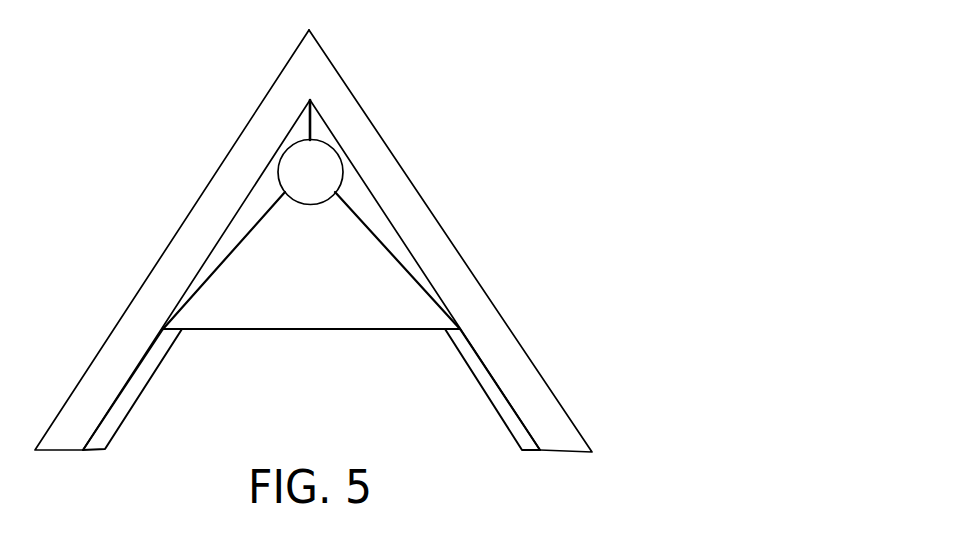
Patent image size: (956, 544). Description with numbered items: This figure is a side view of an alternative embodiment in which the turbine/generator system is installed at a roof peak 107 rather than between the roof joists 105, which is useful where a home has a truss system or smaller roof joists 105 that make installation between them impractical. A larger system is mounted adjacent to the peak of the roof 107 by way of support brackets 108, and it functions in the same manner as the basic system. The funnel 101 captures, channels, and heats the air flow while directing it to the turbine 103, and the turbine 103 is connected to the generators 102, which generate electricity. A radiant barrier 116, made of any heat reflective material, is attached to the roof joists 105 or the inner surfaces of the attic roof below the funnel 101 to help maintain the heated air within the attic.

The funnel 101 is at (240, 243).
The generators 102 is at (307, 205).
The turbine 103 is at (362, 228).
The roof joists 105 is at (538, 368).
The roof peak 107 is at (248, 117).
The support brackets 108 is at (312, 122).
The radiant barrier 116 is at (133, 405).